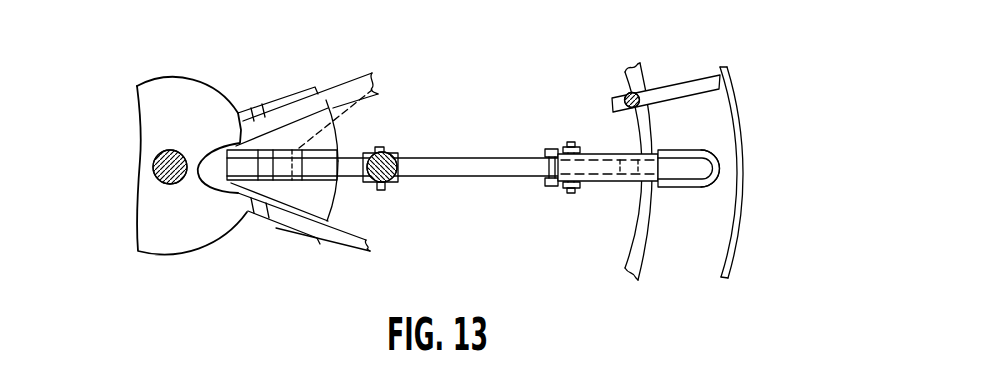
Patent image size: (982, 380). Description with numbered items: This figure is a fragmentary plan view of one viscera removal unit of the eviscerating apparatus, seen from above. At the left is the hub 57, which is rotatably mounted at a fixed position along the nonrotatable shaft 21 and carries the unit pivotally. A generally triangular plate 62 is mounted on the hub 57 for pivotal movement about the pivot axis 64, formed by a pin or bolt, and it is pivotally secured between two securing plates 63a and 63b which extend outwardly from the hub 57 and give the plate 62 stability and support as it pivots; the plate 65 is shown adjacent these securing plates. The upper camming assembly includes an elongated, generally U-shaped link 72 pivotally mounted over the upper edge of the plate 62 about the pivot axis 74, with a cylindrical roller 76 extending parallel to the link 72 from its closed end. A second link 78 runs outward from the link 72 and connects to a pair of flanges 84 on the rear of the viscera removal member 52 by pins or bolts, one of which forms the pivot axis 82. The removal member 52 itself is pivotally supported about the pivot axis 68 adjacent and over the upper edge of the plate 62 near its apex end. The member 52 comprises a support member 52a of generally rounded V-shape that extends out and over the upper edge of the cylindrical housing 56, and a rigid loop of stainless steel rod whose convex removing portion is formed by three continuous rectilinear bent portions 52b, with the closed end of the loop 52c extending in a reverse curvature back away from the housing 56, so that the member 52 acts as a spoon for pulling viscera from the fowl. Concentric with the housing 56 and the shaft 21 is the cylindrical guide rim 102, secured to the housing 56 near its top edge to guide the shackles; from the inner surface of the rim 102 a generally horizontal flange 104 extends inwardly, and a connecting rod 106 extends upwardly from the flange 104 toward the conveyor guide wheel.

The hub 57 is at (168, 103).
The nonrotatable shaft 21 is at (155, 177).
The plate 65 is at (305, 128).
The pivot axis 64 is at (368, 91).
The securing plate 63a is at (335, 188).
The securing plate 63b is at (348, 148).
The plate 62 is at (349, 159).
The second link 78 is at (502, 177).
The U-shaped link 72 is at (417, 186).
The pivot axis 74 is at (382, 190).
The cylindrical roller 76 is at (398, 175).
The flanges 84 is at (530, 157).
The pivot axis 82 is at (553, 148).
The pivot axis 68 is at (570, 146).
The viscera removal member 52 is at (671, 185).
The support member 52a is at (600, 156).
The rectilinear bent portions 52b is at (683, 190).
The closed end of the loop 52c is at (717, 158).
The housing 56 is at (645, 270).
The guide rim 102 is at (738, 222).
The flanges 104 is at (650, 73).
The connecting rods 106 is at (625, 93).